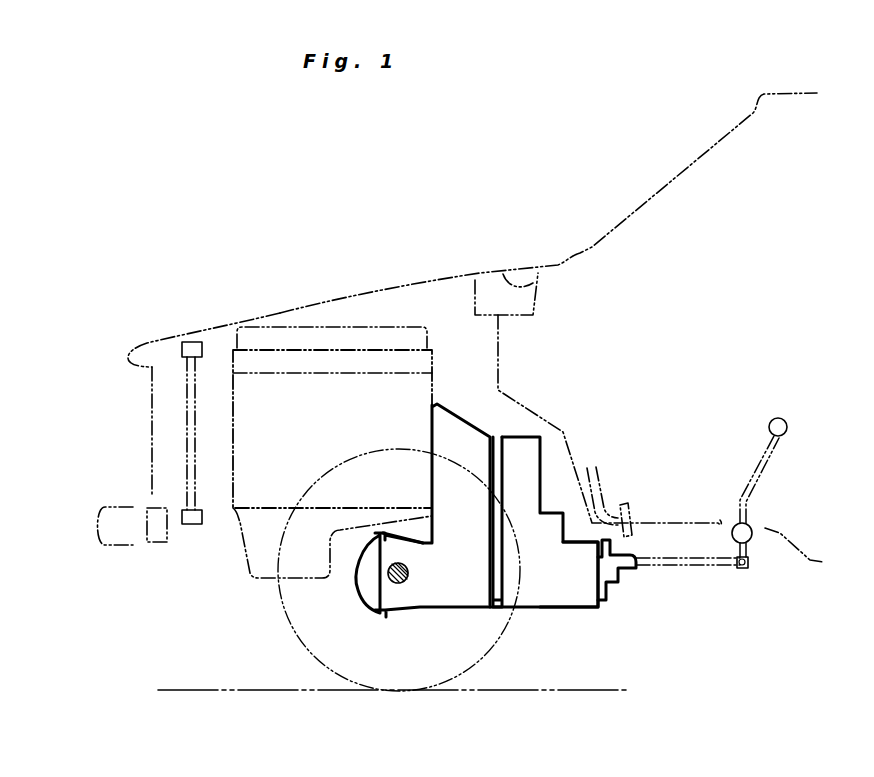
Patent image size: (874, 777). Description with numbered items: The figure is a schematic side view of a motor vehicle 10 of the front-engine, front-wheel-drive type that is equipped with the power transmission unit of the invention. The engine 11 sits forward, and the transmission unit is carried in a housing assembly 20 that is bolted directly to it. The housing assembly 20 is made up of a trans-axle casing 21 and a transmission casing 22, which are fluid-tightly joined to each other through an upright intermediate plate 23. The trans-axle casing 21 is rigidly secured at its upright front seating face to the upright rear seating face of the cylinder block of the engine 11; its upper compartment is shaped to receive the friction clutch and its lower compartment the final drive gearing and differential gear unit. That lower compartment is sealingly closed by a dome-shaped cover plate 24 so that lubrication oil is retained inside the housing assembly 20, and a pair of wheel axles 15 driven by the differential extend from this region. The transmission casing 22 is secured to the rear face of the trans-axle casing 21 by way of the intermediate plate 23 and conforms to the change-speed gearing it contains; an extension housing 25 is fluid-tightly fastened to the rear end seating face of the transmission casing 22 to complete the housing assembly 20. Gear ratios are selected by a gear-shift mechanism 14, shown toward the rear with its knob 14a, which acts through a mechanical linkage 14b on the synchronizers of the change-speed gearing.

The motor vehicle 10 is at (427, 273).
The engine 11 is at (326, 430).
The gear-shift mechanism 14 is at (745, 488).
The shift knob 14a is at (770, 453).
The mechanical linkage 14b is at (692, 563).
The wheel axles 15 is at (407, 563).
The housing assembly 20 is at (520, 434).
The trans-axle casing 21 is at (460, 430).
The transmission casing 22 is at (543, 597).
The intermediate plate 23 is at (497, 607).
The dome-shaped cover plate 24 is at (362, 578).
The extension housing 25 is at (627, 566).